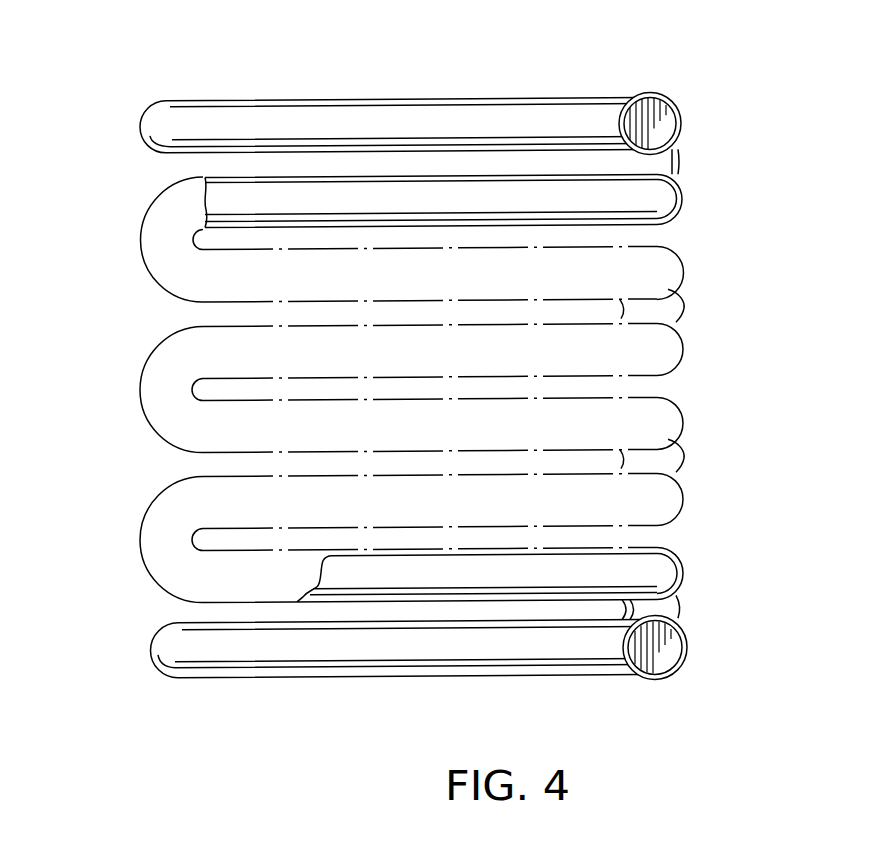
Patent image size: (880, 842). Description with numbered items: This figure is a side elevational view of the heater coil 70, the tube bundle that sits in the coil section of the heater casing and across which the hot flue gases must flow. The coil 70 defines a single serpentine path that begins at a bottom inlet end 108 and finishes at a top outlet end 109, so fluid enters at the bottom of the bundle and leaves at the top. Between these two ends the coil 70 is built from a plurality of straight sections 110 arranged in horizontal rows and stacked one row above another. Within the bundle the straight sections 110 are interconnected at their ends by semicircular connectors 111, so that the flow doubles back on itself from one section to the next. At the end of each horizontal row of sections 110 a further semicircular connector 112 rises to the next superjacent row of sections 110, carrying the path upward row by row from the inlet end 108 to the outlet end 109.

The coil 70 is at (103, 135).
The bottom inlet end 108 is at (688, 642).
The top outlet end 109 is at (680, 108).
The straight sections 110 is at (430, 268).
The semicircular connectors 111 is at (153, 102).
The semicircular connector 112 is at (682, 160).